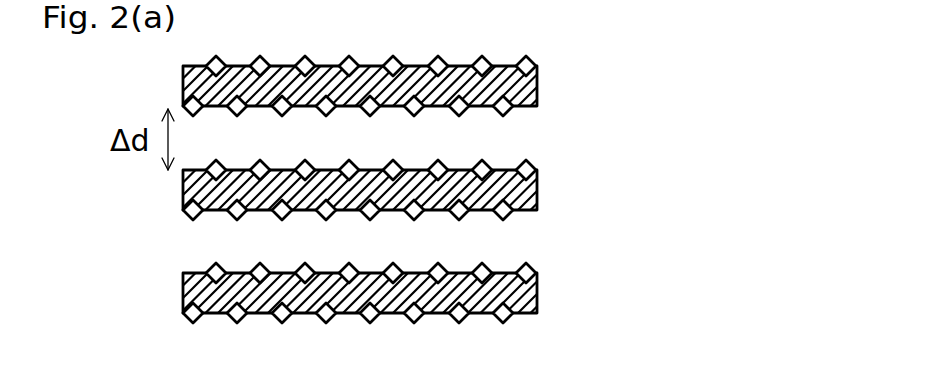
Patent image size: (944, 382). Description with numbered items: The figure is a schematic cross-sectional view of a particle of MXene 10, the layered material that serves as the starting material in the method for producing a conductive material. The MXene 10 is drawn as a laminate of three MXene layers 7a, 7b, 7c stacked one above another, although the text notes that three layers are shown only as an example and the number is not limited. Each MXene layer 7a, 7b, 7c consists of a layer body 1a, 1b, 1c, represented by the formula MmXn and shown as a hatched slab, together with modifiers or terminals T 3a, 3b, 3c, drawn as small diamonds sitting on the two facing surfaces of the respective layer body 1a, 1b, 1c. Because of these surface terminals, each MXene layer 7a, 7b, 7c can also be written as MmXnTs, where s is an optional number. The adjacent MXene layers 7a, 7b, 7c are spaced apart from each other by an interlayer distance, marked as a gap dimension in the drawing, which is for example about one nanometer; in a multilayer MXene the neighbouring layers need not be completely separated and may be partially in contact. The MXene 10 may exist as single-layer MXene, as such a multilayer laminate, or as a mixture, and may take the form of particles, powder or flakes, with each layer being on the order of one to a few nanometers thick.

The layer body 1a is at (537, 85).
The modifier or terminal T 3a is at (531, 62).
The MXene layer 7a is at (435, 87).
The layer body 1b is at (393, 190).
The modifier or terminal T 3b is at (413, 191).
The MXene layer 7b is at (435, 191).
The layer body 1c is at (392, 293).
The modifier or terminal T 3c is at (412, 294).
The MXene layer 7c is at (434, 294).
The MXene 10 is at (491, 203).